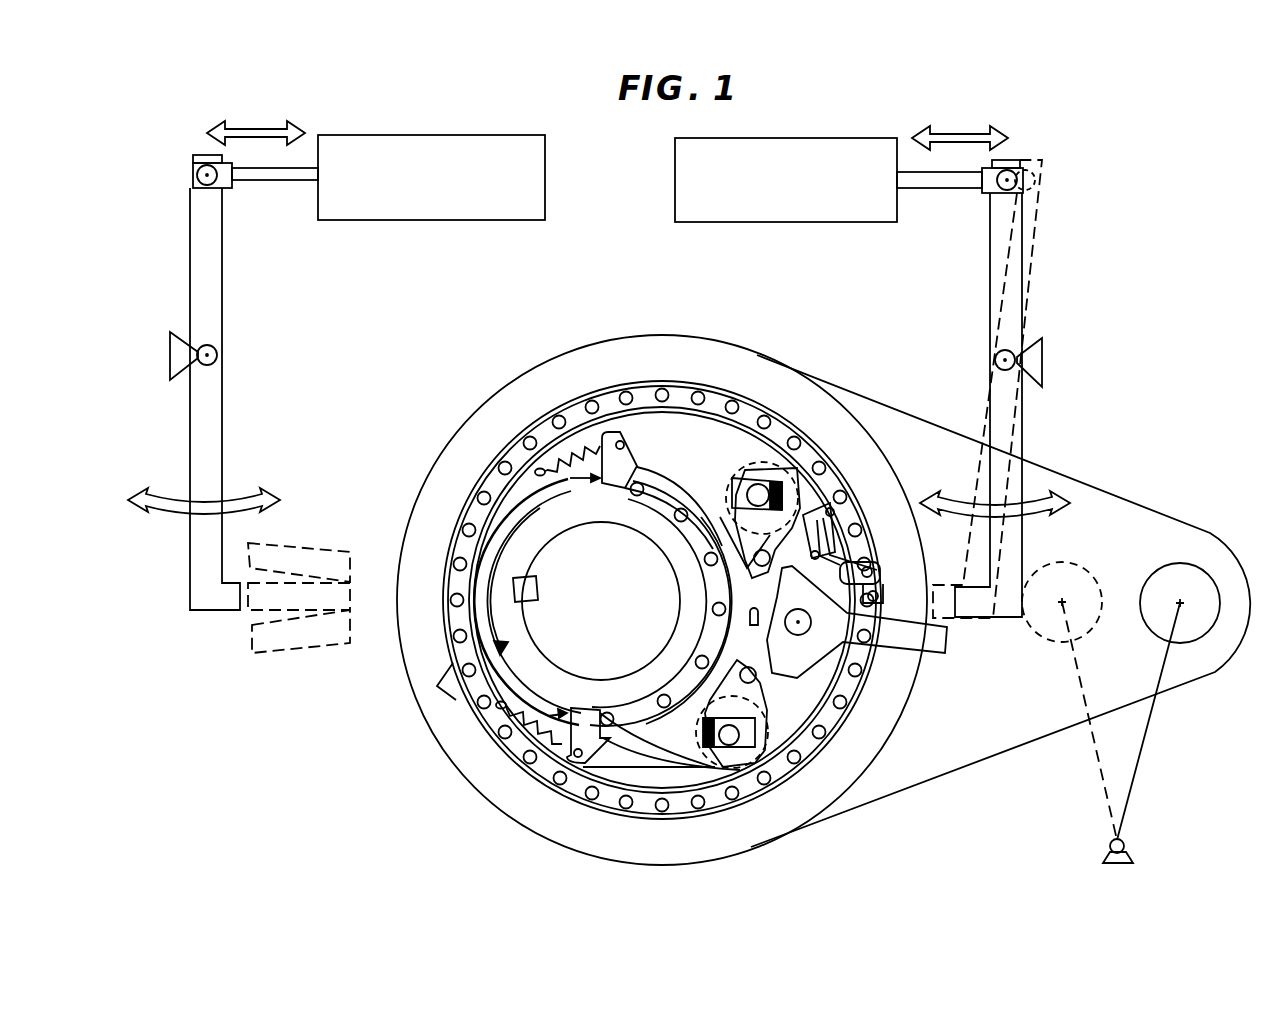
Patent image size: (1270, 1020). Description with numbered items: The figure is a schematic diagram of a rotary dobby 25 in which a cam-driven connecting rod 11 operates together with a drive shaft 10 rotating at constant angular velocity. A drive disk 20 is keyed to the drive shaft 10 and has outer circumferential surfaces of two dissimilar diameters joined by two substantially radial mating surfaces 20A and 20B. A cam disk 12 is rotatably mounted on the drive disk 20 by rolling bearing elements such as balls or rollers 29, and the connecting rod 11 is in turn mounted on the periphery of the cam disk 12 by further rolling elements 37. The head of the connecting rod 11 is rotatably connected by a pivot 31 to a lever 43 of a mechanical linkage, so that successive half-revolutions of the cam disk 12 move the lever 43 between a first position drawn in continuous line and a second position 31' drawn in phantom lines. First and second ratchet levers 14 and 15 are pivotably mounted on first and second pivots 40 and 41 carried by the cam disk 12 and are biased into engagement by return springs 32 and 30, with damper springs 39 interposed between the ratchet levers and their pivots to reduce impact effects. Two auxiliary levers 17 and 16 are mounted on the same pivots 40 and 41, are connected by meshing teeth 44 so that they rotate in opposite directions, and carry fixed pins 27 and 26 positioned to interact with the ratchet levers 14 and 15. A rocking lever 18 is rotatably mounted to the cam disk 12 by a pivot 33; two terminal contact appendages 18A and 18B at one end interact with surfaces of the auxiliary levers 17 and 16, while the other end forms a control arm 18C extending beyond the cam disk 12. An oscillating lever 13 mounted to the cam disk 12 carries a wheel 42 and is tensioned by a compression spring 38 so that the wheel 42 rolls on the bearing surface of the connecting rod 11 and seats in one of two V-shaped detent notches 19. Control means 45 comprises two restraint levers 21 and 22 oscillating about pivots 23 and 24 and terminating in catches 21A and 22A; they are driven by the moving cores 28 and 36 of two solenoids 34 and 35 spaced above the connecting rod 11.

The drive shaft 10 is at (557, 558).
The cam-driven connecting rod 11 is at (1052, 480).
The cam disk 12 is at (670, 783).
The oscillating lever 13 is at (827, 513).
The first ratchet lever 14 is at (648, 760).
The second ratchet lever 15 is at (642, 453).
The second auxiliary lever 16 is at (783, 527).
The first auxiliary lever 17 is at (803, 807).
The rocking lever 18 is at (903, 668).
The terminal contact appendage 18A is at (758, 659).
The terminal contact appendage 18B is at (764, 577).
The control arm 18C is at (954, 652).
The V-shaped detent notches 19 is at (436, 690).
The drive disk 20 is at (483, 723).
The mating surface 20A is at (513, 683).
The mating surface 20B is at (560, 475).
The restraint lever 21 is at (1013, 273).
The terminal portion 21A is at (1002, 631).
The restraint lever 22 is at (198, 280).
The terminal portion 22A is at (212, 626).
The pivot 23 is at (1020, 340).
The pivot 24 is at (228, 345).
The rotary dobby 25 is at (323, 749).
The fixed pin 26 is at (713, 573).
The fixed pin 27 is at (843, 797).
The moving core 28 is at (942, 182).
The rolling bearing elements 29 is at (617, 753).
The return spring 30 is at (578, 477).
The pivot 31 is at (1180, 556).
The second position 31' is at (1087, 544).
The return spring 32 is at (562, 740).
The pivot 33 is at (852, 650).
The solenoid 34 is at (878, 218).
The solenoid 35 is at (512, 220).
The moving core 36 is at (268, 180).
The rolling elements 37 is at (455, 528).
The compression spring 38 is at (903, 657).
The damper springs 39 is at (767, 480).
The first pivot 40 is at (753, 780).
The second pivot 41 is at (735, 480).
The wheel 42 is at (887, 522).
The lever 43 is at (1143, 757).
The meshing teeth 44 is at (797, 698).
The control means 45 is at (155, 342).